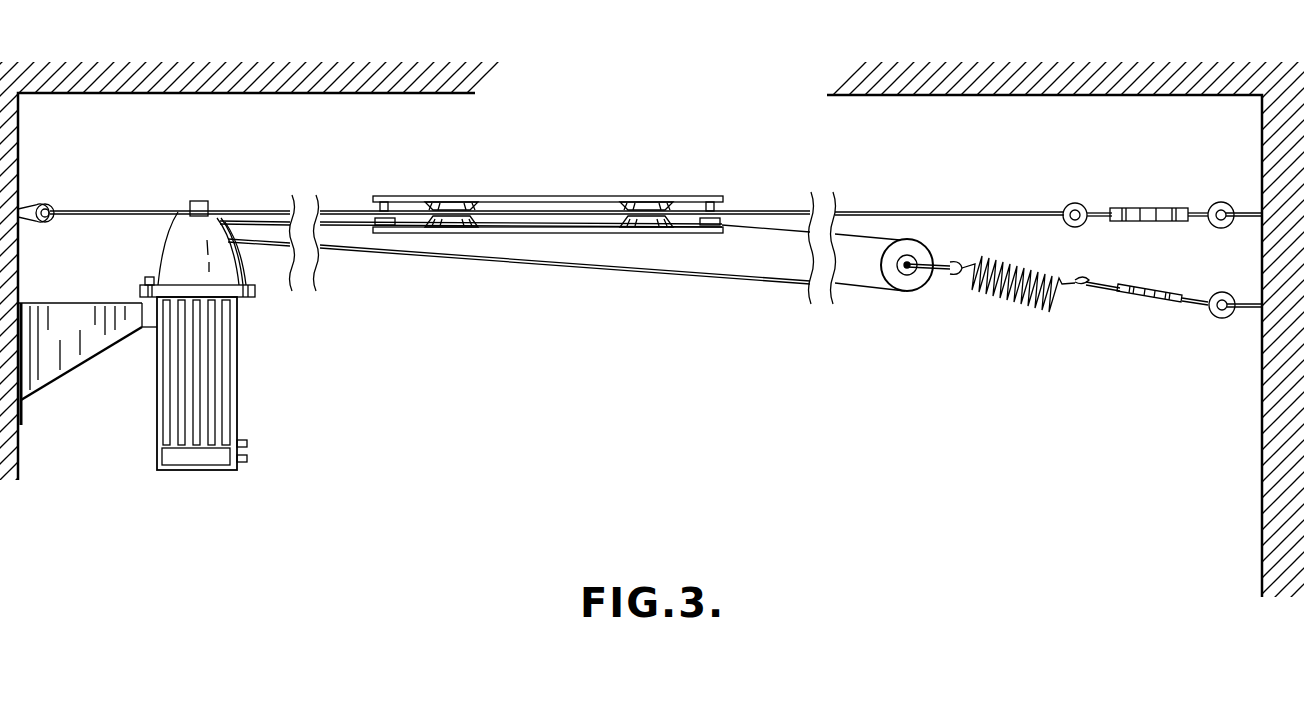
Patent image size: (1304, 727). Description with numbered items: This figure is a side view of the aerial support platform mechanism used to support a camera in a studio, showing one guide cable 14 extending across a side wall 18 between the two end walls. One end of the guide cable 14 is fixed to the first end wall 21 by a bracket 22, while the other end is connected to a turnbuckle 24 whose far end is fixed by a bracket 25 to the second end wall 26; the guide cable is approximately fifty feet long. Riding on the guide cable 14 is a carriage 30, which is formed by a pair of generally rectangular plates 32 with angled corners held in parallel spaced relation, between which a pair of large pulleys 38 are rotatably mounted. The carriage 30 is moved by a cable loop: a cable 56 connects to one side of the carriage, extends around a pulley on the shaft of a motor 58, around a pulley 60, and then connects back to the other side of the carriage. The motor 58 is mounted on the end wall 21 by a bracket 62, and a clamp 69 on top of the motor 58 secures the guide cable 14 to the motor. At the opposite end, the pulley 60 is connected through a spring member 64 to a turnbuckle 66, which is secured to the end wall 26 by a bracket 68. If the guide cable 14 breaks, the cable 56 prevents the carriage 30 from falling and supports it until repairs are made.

The guide cable 14 is at (146, 208).
The side wall 18 is at (479, 412).
The first end wall 21 is at (24, 135).
The bracket 22 is at (50, 210).
The turnbuckle 24 is at (1146, 193).
The bracket 25 is at (1224, 207).
The second end wall 26 is at (1258, 394).
The carriage 30 is at (567, 188).
The plates 32 is at (690, 198).
The large pulleys 38 is at (445, 205).
The cable 56 is at (324, 239).
The motor 58 is at (250, 395).
The pulley 60 is at (905, 291).
The bracket 62 is at (60, 368).
The spring member 64 is at (1020, 300).
The turnbuckle 66 is at (1154, 303).
The bracket 68 is at (1224, 322).
The clamp 69 is at (210, 207).